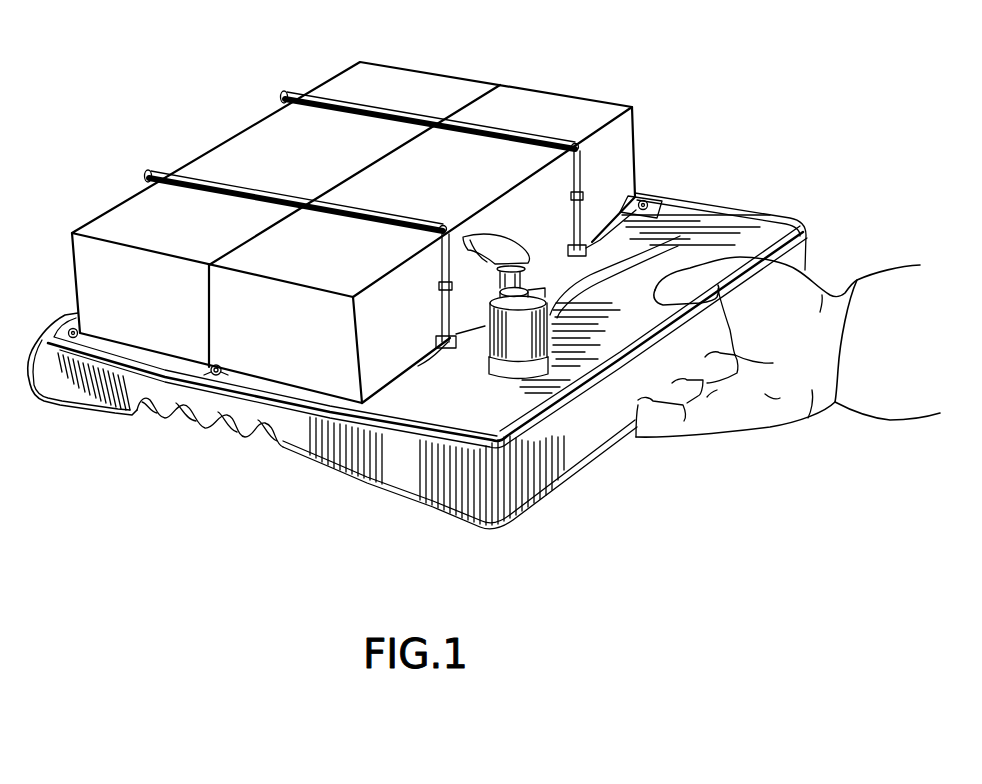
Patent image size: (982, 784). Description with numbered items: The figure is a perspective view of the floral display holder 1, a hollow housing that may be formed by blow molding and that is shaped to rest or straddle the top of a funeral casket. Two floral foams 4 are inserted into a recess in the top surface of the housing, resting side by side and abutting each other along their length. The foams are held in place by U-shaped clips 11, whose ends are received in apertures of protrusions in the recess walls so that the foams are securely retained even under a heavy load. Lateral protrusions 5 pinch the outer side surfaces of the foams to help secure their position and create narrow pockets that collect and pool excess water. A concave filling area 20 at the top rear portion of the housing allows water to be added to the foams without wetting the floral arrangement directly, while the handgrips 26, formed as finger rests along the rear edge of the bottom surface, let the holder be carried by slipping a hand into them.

The floral display holder 1 is at (705, 163).
The floral foams 4 is at (528, 115).
The lateral protrusions 5 is at (213, 374).
The U-shaped clips 11 is at (148, 170).
The filling area 20 is at (657, 250).
The handgrips 26 is at (250, 425).